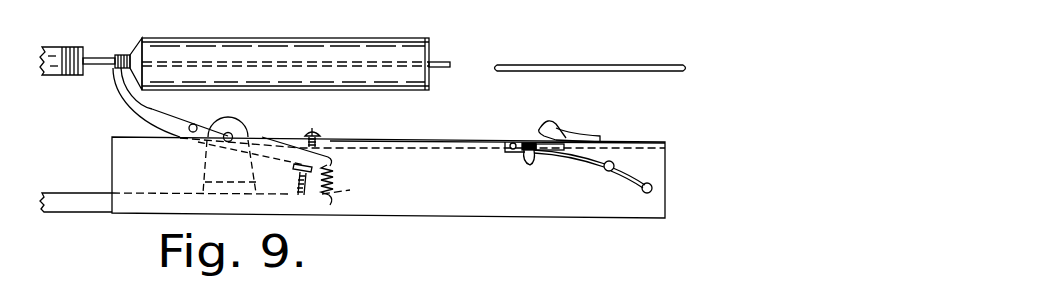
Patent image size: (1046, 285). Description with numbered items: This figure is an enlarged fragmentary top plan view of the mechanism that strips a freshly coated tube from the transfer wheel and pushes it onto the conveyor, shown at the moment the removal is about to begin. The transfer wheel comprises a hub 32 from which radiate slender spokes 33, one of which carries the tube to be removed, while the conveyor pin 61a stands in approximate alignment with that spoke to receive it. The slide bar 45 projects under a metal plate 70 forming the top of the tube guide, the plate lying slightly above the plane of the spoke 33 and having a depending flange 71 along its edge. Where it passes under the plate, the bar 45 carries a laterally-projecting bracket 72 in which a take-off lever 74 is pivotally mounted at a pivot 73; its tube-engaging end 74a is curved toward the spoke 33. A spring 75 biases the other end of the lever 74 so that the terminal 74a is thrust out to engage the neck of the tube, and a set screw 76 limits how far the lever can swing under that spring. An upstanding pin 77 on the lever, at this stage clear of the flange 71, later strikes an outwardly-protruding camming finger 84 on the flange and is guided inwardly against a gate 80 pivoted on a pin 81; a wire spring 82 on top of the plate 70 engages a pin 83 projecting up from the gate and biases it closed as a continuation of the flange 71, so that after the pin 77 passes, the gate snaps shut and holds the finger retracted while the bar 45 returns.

The hub 32 is at (60, 48).
The spoke 33 is at (440, 63).
The conveyor pin 61a is at (573, 64).
The tube-engaging end of finger 74a is at (118, 80).
The take-off lever 74 is at (262, 137).
The upstanding pin 77 is at (195, 124).
The laterally-projecting bracket 72 is at (241, 126).
The pivot 73 is at (230, 133).
The set screw 76 is at (317, 133).
The spring 75 is at (335, 180).
The depending flange 71 is at (433, 124).
The plate 70 is at (437, 198).
The slide bar 45 is at (62, 200).
The pin 81 is at (511, 143).
The pivoted gate 80 is at (522, 142).
The pin 83 is at (546, 127).
The camming finger 84 is at (562, 131).
The wire spring 82 is at (590, 160).